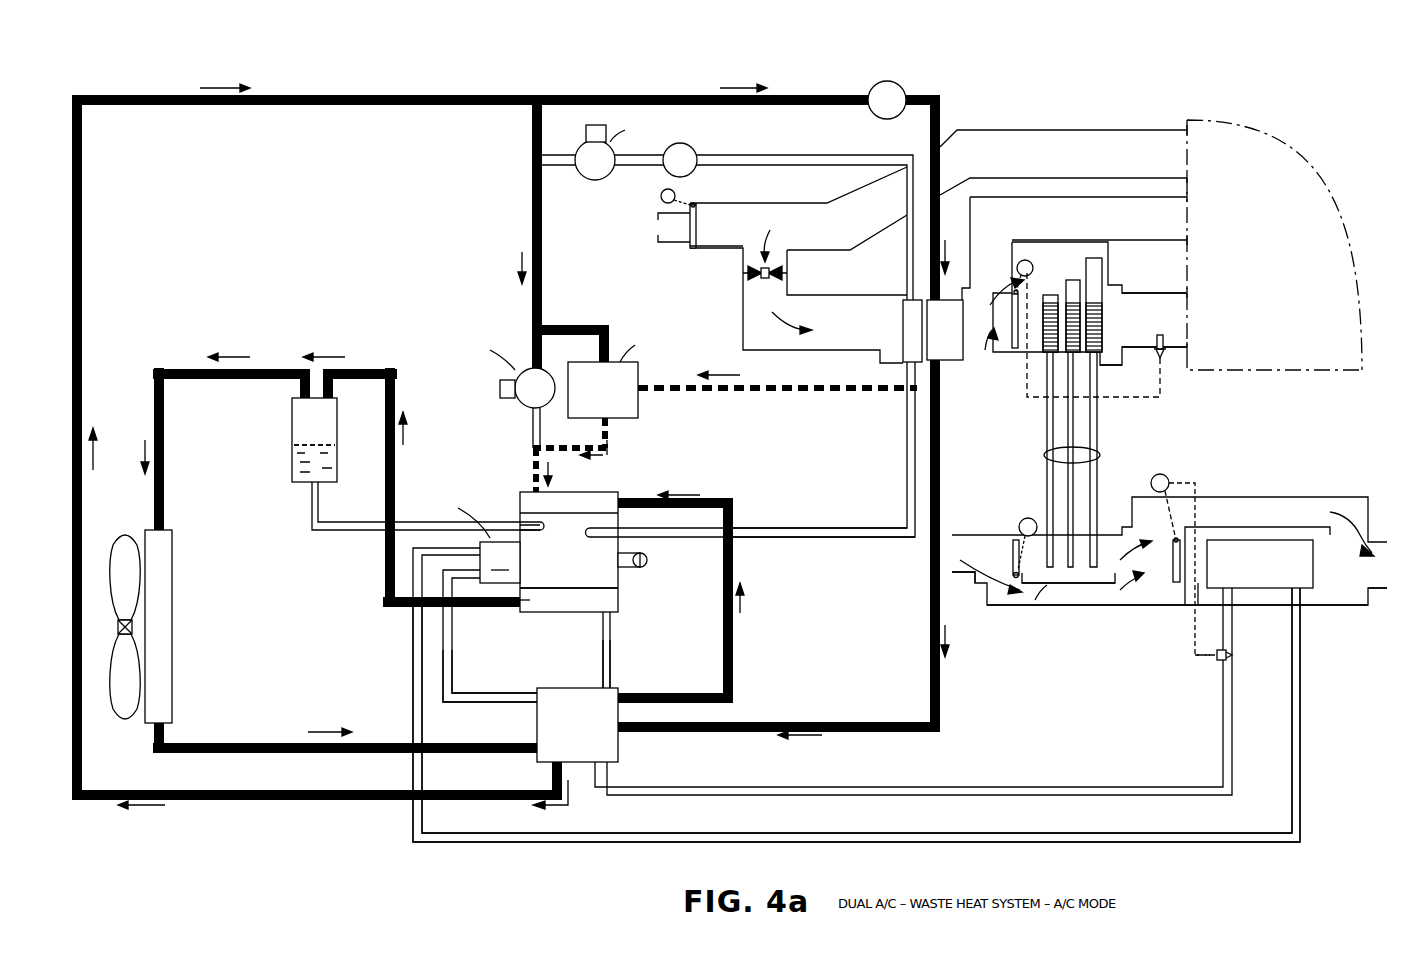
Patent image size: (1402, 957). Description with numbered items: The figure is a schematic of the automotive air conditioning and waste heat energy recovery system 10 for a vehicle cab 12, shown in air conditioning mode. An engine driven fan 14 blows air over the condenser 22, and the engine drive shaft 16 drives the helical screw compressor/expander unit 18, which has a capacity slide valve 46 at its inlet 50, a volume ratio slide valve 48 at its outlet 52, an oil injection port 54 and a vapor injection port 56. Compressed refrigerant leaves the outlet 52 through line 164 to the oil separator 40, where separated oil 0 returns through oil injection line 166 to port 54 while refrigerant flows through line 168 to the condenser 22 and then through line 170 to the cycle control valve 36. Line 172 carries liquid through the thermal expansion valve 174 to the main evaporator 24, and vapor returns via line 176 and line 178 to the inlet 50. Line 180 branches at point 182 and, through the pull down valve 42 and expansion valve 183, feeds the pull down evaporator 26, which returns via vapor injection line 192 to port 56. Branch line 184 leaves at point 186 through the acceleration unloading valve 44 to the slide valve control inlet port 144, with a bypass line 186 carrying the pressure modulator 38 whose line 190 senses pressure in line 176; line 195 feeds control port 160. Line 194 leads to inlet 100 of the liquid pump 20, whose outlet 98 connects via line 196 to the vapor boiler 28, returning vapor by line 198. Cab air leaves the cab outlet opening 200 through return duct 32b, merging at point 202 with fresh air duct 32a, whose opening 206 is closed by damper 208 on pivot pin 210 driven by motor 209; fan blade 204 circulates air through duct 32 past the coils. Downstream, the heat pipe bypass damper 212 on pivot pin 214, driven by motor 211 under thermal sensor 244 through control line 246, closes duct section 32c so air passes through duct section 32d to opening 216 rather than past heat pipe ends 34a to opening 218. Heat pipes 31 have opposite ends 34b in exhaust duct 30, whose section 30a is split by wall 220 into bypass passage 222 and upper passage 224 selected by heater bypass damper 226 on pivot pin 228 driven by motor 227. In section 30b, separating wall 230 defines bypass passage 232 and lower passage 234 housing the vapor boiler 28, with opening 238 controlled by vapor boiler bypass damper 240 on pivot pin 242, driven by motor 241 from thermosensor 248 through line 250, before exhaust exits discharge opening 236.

The automotive air conditioning and waste heat energy recovery system 10 is at (372, 822).
The cab 12 is at (1338, 367).
The engine driven fan 14 is at (141, 532).
The drive shaft 16 is at (640, 567).
The compressor/expander unit 18 is at (594, 488).
The auxiliary pump 20 is at (500, 562).
The condenser 22 is at (172, 545).
The main evaporator 24 is at (955, 370).
The pull down evaporator 26 is at (902, 345).
The vapor boiler 28 is at (1252, 590).
The exhaust duct 30 is at (1020, 608).
The exhaust duct section 30a is at (1110, 608).
The exhaust duct section 30b is at (1335, 610).
The heat pipes 31 is at (1086, 455).
The cab conditioned air flow duct 32 is at (808, 352).
The fresh air inlet duct 32a is at (692, 251).
The cab air return duct 32b is at (822, 201).
The conditioned air flow duct section 32c is at (1134, 293).
The duct section 32d is at (1066, 221).
The heat pipe ends 34a is at (1070, 315).
The heat pipe ends 34b is at (1092, 560).
The cycle control valve 36 is at (560, 686).
The pressure modulator 38 is at (638, 400).
The oil separator 40 is at (292, 436).
The oil 0 is at (335, 472).
The pull down valve 42 is at (590, 180).
The acceleration unloading valve 44 is at (500, 390).
The capacity slide valve 46 is at (620, 502).
The volume ratio slide valve 48 is at (618, 605).
The inlet 50 is at (630, 508).
The outlet 52 is at (515, 612).
The oil injection port 54 is at (537, 532).
The vapor injection port 56 is at (585, 536).
The pump outlet 98 is at (462, 576).
The pump inlet 100 is at (460, 605).
The capacity slide valve control inlet port 144 is at (532, 485).
The control port 160 is at (604, 614).
The line 164 is at (383, 600).
The oil injection line 166 is at (310, 527).
The line 168 is at (166, 496).
The line 170 is at (258, 742).
The line 172 is at (372, 97).
The thermal expansion valve 174 is at (897, 85).
The line 176 is at (942, 430).
The line 178 is at (736, 650).
The line 180 is at (530, 124).
The branch point 182 is at (533, 95).
The thermal expansion valve 183 is at (698, 158).
The branch line 184 is at (542, 290).
The bypass line 186 is at (530, 165).
The line 190 is at (772, 394).
The vapor injection line 192 is at (868, 540).
The line 194 is at (482, 690).
The line 195 is at (695, 665).
The line 196 is at (412, 714).
The line 198 is at (882, 787).
The cab outlet opening 200 is at (1190, 142).
The merge point 202 is at (785, 266).
The fan blade 204 is at (766, 280).
The fresh air inlet opening 206 is at (655, 226).
The fresh air damper 208 is at (698, 228).
The motor 209 is at (660, 196).
The pivot pin 210 is at (695, 204).
The motor 211 is at (1034, 264).
The heat pipe bypass damper 212 is at (1011, 325).
The pivot pin 214 is at (1010, 292).
The opening 216 is at (1190, 226).
The opening 218 is at (1190, 312).
The wall 220 is at (1048, 585).
The heat pipe bypass passage 222 is at (1074, 603).
The upper flow passage 224 is at (1136, 565).
The heater bypass damper 226 is at (1010, 548).
The motor 227 is at (1030, 518).
The pivot pin 228 is at (990, 583).
The separating wall 230 is at (1248, 527).
The vapor boiler bypass passage 232 is at (1308, 521).
The lower flow passage 234 is at (1310, 535).
The discharge opening 236 is at (1382, 568).
The upstream opening 238 is at (1196, 605).
The vapor boiler bypass damper 240 is at (1173, 565).
The motor 241 is at (1168, 475).
The pivot pin 242 is at (1178, 535).
The thermal sensor 244 is at (1168, 338).
The control line 246 is at (1163, 396).
The thermosensor 248 is at (1219, 662).
The line 250 is at (1193, 655).